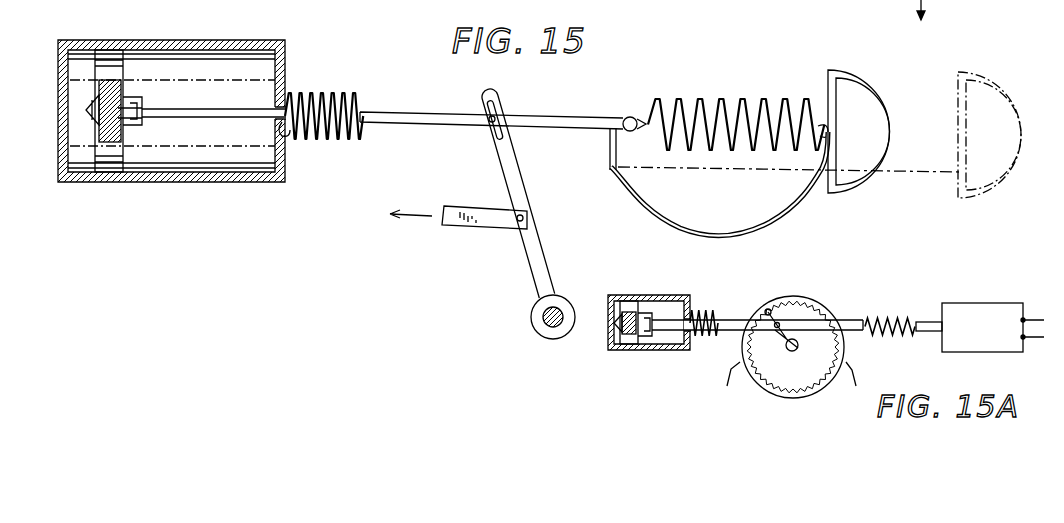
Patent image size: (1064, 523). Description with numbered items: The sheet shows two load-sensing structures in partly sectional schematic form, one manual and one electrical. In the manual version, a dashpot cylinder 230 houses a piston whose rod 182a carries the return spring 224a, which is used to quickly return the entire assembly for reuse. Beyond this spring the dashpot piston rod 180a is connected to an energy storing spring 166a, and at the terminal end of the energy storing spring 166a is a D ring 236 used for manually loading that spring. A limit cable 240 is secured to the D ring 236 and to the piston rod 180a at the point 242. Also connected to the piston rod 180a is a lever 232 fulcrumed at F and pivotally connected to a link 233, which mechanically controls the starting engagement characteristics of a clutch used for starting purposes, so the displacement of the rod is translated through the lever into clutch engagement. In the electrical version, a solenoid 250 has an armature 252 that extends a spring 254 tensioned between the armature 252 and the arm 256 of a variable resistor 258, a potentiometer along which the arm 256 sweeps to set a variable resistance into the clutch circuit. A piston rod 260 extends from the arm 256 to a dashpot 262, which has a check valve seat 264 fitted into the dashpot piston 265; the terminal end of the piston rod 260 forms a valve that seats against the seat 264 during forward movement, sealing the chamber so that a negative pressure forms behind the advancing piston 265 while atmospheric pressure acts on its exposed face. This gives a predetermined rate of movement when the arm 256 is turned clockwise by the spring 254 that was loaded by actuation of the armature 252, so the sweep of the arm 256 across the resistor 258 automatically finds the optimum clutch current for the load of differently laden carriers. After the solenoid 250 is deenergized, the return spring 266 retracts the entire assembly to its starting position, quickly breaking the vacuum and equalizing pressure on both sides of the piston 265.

In FIG. 15, the hydraulic cylinder 230 is at (228, 41).
In FIG. 15, the piston rod 182a is at (124, 82).
In FIG. 15, the return spring 224a is at (356, 108).
In FIG. 15, the piston rod 180a is at (528, 116).
In FIG. 15, the lever 232 is at (505, 160).
In FIG. 15, the link 233 is at (470, 222).
In FIG. 15, the fulcrum F is at (541, 320).
In FIG. 15, the energy storing spring 166a is at (690, 108).
In FIG. 15, the securing point 242 is at (607, 145).
In FIG. 15, the limit cable 240 is at (792, 208).
In FIG. 15, the D ring 236 is at (866, 106).
In FIG. 15A, the check valve seat 264 is at (623, 350).
In FIG. 15A, the dashpot 262 is at (637, 300).
In FIG. 15A, the dashpot piston 265 is at (650, 345).
In FIG. 15A, the return spring 266 is at (700, 317).
In FIG. 15A, the piston rod 260 is at (732, 327).
In FIG. 15A, the arm 256 is at (784, 352).
In FIG. 15A, the variable resistor 258 is at (748, 358).
In FIG. 15A, the spring 254 is at (905, 318).
In FIG. 15A, the armature 252 is at (935, 332).
In FIG. 15A, the solenoid 250 is at (993, 346).